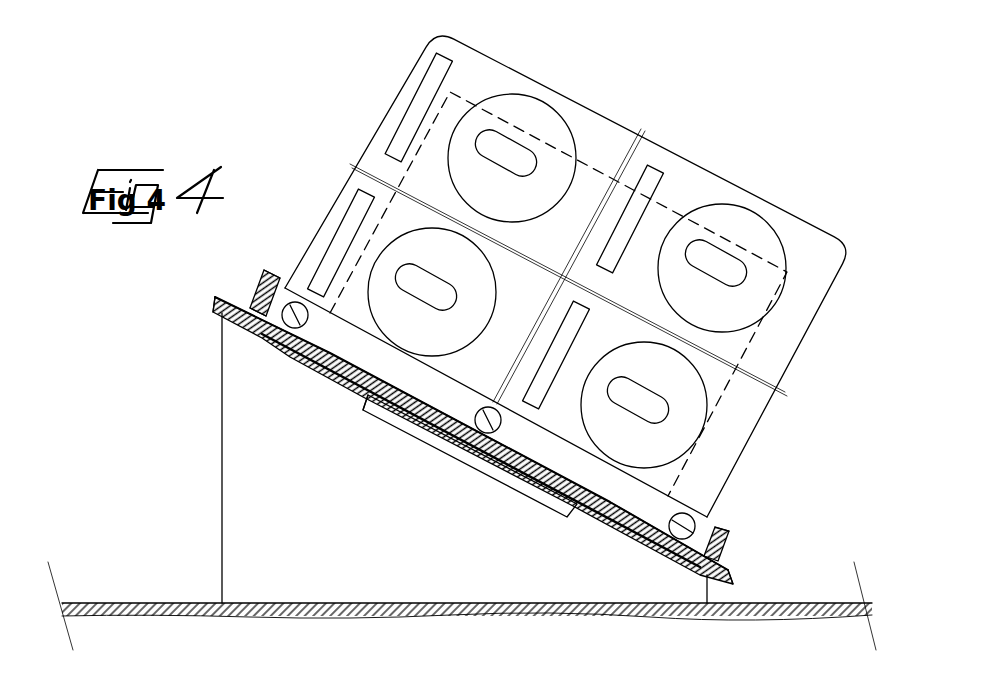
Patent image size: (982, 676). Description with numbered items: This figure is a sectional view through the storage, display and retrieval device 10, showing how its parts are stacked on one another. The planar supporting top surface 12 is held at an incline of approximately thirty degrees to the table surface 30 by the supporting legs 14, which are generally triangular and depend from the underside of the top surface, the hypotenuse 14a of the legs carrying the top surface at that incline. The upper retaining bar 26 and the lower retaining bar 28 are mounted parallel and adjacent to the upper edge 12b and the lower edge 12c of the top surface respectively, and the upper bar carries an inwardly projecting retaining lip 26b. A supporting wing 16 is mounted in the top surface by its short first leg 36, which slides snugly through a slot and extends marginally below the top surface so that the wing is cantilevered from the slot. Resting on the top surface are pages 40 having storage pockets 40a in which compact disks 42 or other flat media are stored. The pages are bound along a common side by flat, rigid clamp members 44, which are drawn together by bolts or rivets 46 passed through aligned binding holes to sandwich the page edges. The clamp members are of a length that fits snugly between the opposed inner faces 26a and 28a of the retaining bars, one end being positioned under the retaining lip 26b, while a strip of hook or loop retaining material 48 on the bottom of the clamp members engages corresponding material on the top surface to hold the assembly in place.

The storage, display and retrieval device 10 is at (346, 119).
The planar supporting top surface 12 is at (476, 441).
The upper edge of top surface 12b is at (210, 299).
The lower edge of top surface 12c is at (736, 581).
The supporting legs 14 is at (232, 453).
The hypotenuse of legs 14a is at (350, 388).
The supporting wing 16 is at (732, 343).
The upper retaining bar 26 is at (212, 305).
The inner face of upper retaining bar 26a is at (263, 335).
The retaining lip 26b is at (281, 271).
The lower retaining bar 28 is at (767, 515).
The inner face of lower retaining bar 28a is at (716, 526).
The table surface 30 is at (172, 603).
The short first leg of supporting wing 36 is at (431, 452).
The pages 40 is at (687, 182).
The storage pockets 40a is at (603, 128).
The compact disks 42 is at (517, 112).
The clamp members 44 is at (590, 475).
The bolts or rivets 46 is at (500, 429).
The strip of hook or loop retaining material 48 is at (345, 357).